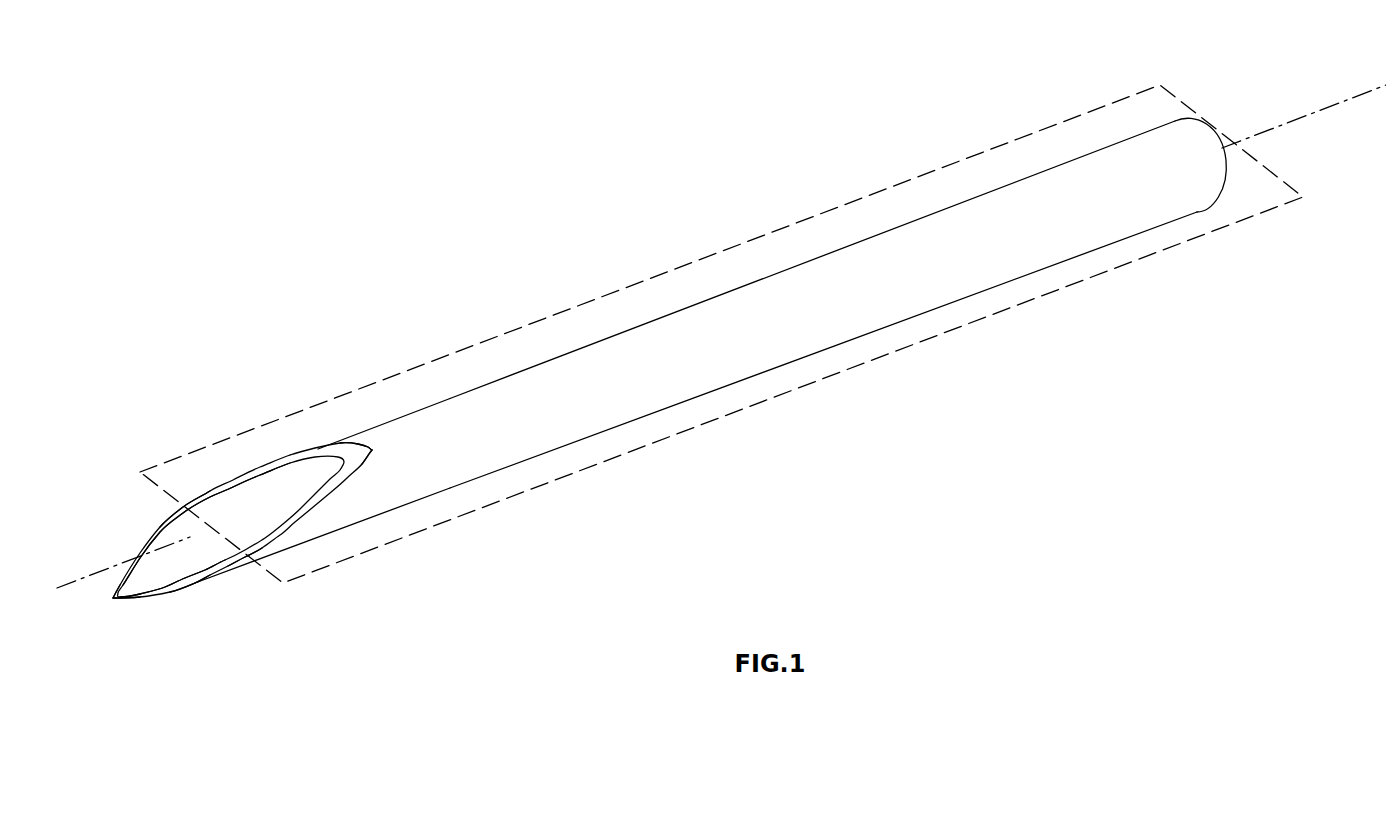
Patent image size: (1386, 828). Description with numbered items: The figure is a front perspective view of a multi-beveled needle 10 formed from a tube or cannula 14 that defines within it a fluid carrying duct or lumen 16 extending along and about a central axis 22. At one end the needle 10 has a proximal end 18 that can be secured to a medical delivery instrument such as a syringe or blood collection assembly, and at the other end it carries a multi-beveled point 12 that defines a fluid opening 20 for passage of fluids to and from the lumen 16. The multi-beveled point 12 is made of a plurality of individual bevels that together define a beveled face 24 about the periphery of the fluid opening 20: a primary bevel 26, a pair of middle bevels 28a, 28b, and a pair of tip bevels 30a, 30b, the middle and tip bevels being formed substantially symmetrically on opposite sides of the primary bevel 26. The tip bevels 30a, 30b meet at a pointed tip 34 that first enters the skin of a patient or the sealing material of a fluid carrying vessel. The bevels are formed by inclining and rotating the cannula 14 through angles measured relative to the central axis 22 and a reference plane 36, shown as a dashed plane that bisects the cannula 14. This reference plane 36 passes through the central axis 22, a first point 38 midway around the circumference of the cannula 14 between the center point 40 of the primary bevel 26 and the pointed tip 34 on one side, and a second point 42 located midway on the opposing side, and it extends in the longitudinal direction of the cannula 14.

The needle 10 is at (719, 372).
The multi-beveled point 12 is at (255, 508).
The cannula 14 is at (820, 268).
The lumen 16 is at (273, 505).
The proximal end 18 is at (1198, 118).
The fluid opening 20 is at (308, 467).
The central axis 22 is at (83, 579).
The beveled face 24 is at (200, 584).
The primary bevel 26 is at (360, 450).
The middle bevel 28a is at (230, 574).
The middle bevel 28b is at (168, 520).
The tip bevel 30a is at (165, 593).
The tip bevel 30b is at (140, 548).
The pointed tip 34 is at (115, 603).
The reference plane 36 is at (488, 352).
The first point 38 is at (183, 507).
The center point 40 is at (370, 449).
The second point 42 is at (255, 562).